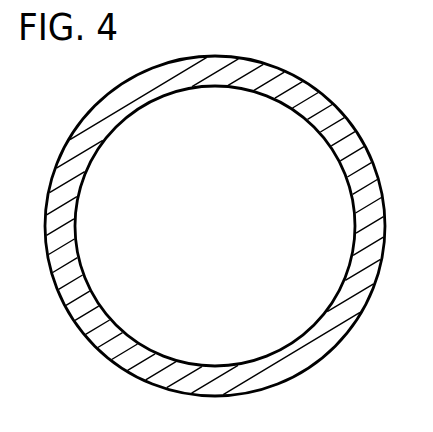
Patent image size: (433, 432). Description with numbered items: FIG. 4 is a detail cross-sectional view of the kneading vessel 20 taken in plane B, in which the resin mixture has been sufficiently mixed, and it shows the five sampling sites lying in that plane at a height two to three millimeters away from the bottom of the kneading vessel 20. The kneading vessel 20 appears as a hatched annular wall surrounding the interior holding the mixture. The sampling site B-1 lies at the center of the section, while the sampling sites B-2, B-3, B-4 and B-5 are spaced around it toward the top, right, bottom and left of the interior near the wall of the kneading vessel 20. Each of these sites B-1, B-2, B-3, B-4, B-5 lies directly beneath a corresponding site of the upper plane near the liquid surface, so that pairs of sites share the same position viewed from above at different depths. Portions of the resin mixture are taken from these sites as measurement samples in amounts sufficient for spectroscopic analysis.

The kneading vessel 20 is at (409, 74).
The sampling site B1 B-1 is at (215, 226).
The sampling site B2 B-2 is at (215, 106).
The sampling site B3 B-3 is at (326, 226).
The sampling site B4 B-4 is at (215, 343).
The sampling site B5 B-5 is at (101, 226).